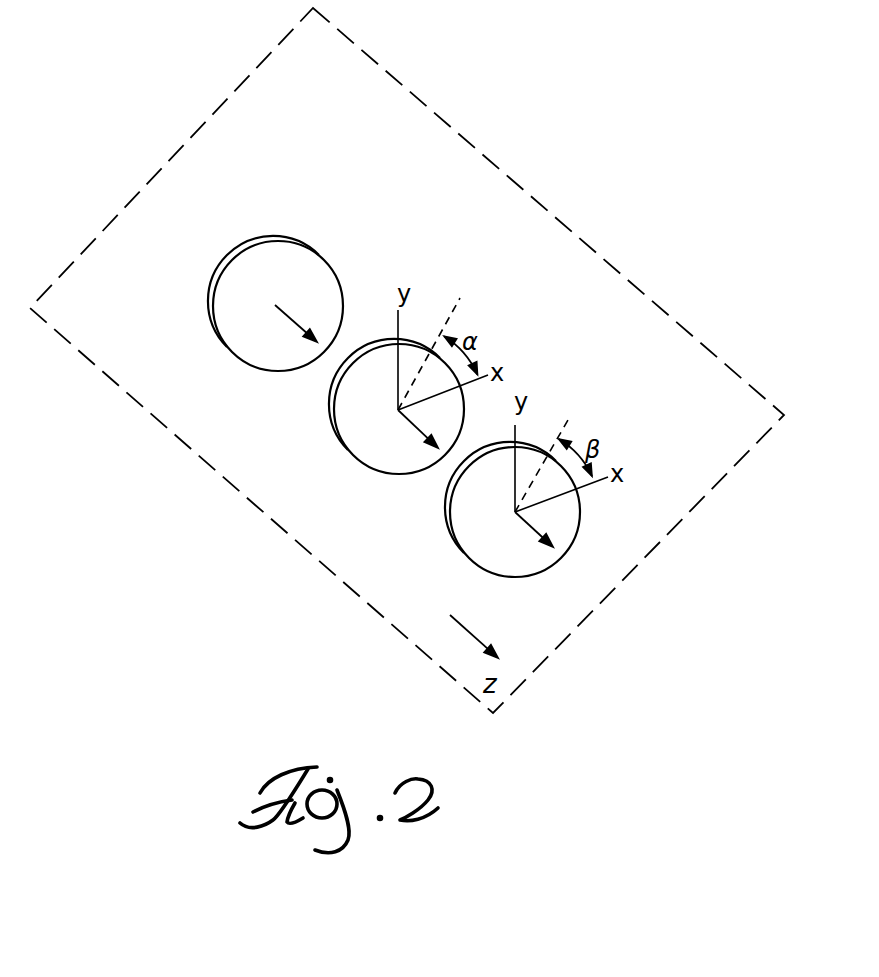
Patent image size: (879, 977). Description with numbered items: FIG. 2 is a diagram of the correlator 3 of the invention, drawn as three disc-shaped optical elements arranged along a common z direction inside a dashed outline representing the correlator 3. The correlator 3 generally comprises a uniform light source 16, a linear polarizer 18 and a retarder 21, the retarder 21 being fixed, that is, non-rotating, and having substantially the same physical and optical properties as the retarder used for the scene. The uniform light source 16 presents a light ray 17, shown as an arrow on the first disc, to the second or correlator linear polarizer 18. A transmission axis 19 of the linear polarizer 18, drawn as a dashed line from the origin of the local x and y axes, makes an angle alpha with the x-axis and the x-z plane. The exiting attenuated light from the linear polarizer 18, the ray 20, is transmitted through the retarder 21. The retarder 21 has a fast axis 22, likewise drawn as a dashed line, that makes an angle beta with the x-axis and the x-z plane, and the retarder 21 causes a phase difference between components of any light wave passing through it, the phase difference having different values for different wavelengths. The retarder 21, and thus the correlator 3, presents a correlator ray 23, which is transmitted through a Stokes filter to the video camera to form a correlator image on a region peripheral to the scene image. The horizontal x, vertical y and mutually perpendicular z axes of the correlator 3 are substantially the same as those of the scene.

The correlator 3 is at (466, 139).
The uniform light source 16 is at (205, 298).
The ray 17 is at (292, 325).
The linear polarizer 18 is at (327, 402).
The transmission axis 19 is at (456, 297).
The ray 20 is at (413, 425).
The retarder 21 is at (443, 512).
The fast axis 22 is at (564, 419).
The ray 23 is at (530, 537).